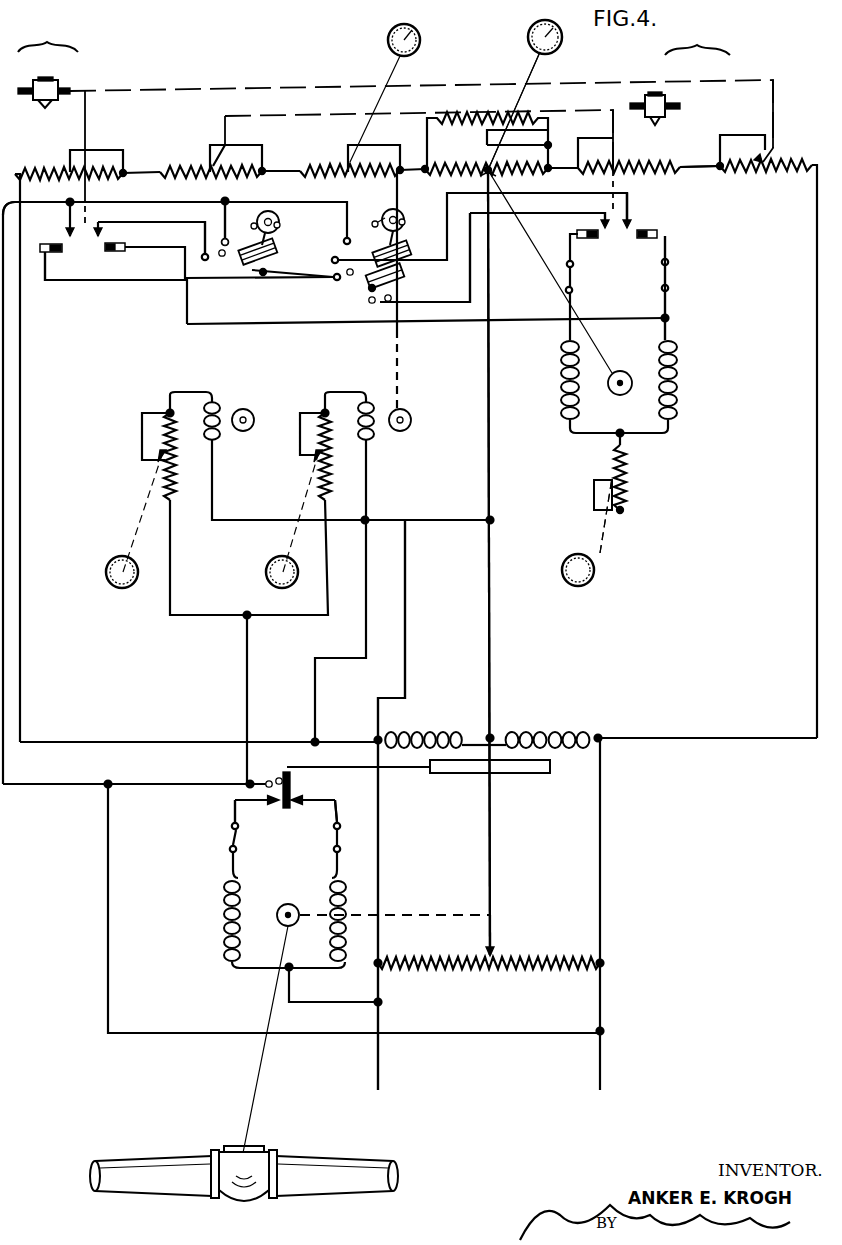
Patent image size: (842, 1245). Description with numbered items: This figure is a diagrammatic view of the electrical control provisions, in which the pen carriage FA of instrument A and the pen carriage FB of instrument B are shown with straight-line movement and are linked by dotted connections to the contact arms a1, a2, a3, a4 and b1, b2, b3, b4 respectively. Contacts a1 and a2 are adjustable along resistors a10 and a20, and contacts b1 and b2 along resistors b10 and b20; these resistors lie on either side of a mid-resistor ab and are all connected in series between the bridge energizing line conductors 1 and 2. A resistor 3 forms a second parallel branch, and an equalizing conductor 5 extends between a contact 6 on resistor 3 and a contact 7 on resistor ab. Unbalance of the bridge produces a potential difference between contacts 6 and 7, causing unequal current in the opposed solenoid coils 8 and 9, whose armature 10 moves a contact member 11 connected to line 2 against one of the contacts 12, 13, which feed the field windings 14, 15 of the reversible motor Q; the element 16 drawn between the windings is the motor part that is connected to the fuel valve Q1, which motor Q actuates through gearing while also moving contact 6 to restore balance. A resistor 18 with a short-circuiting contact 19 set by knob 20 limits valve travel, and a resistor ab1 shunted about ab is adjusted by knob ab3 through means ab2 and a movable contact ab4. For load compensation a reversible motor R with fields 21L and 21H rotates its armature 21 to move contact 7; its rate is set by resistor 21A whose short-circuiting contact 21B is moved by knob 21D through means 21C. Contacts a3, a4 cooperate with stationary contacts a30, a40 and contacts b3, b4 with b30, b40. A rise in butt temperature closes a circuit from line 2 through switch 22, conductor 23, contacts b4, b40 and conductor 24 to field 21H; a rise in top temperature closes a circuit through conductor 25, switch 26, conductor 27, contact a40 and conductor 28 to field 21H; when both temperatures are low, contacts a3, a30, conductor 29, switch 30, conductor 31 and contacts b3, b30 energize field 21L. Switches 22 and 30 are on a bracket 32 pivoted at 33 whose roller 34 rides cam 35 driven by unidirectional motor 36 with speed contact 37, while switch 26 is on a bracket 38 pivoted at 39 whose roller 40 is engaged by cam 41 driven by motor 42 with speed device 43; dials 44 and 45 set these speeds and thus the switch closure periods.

The instrument A is at (48, 33).
The instrument B is at (697, 38).
The carriage FA is at (55, 90).
The pen carriage FB is at (665, 104).
The manually adjustable knob 20 is at (420, 32).
The connecting means ab2 is at (525, 70).
The manually adjustable knob ab3 is at (565, 41).
The resistor a10 is at (68, 159).
The contact arm a1 is at (70, 167).
The resistor b10 is at (170, 168).
The contact arm b1 is at (206, 160).
The resistor 18 is at (308, 165).
The contact 19 is at (348, 160).
The resistor ab1 is at (442, 120).
The movable contact ab4 is at (517, 135).
The mid-resistor ab is at (460, 160).
The contact 7 is at (482, 176).
The contact arm b2 is at (624, 166).
The resistor b20 is at (668, 162).
The contact arm a2 is at (742, 149).
The resistor a20 is at (754, 170).
The line conductor 2 is at (330, 200).
The conductor 23 is at (630, 210).
The equalizing conductor 5 is at (492, 560).
The contact a3 is at (66, 242).
The stationary contact a30 is at (52, 253).
The contact a4 is at (92, 244).
The stationary contact a40 is at (114, 246).
The conductor 27 is at (135, 212).
The conductor 25 is at (222, 222).
The conductor 29 is at (138, 280).
The conductor 28 is at (330, 326).
The roller 40 is at (258, 210).
The cam 41 is at (278, 220).
The bracket 38 is at (280, 240).
The switch 26 is at (275, 256).
The pivot 39 is at (272, 272).
The roller 34 is at (376, 218).
The cam 35 is at (396, 210).
The switch 22 is at (398, 248).
The switch 30 is at (400, 275).
The bracket 32 is at (380, 290).
The pivot 33 is at (368, 300).
The conductor 31 is at (428, 302).
The contact b3 is at (598, 226).
The contact b4 is at (634, 230).
The stationary contact b30 is at (590, 240).
The stationary contact b40 is at (640, 240).
The conductor 24 is at (668, 306).
The unidirectional motor 42 is at (200, 394).
The adjustable resistor and contact 43 is at (140, 432).
The contact 37 is at (310, 405).
The unidirectional motor 36 is at (376, 438).
The manual adjusting dial 45 is at (112, 568).
The manual adjusting dial 44 is at (274, 560).
The line conductor 1 is at (408, 574).
The field 21L is at (560, 386).
The field 21H is at (680, 378).
The reversible motor R is at (620, 364).
The motor armature 21 is at (624, 394).
The speed control adjusting resistor 21A is at (626, 474).
The short circuiting contact 21B is at (594, 494).
The connecting means 21C is at (604, 552).
The knob 21D is at (594, 576).
The solenoid coil 8 is at (426, 732).
The solenoid coil 9 is at (540, 732).
The armature 10 is at (460, 774).
The contact member 11 is at (292, 790).
The contact 12 is at (270, 802).
The contact 13 is at (296, 802).
The reversible motor Q is at (290, 865).
The field winding 14 is at (224, 904).
The field winding 15 is at (346, 888).
The motor shaft 16 is at (278, 920).
The contact 6 is at (486, 950).
The resistor 3 is at (520, 958).
The fuel valve Q1 is at (230, 1200).